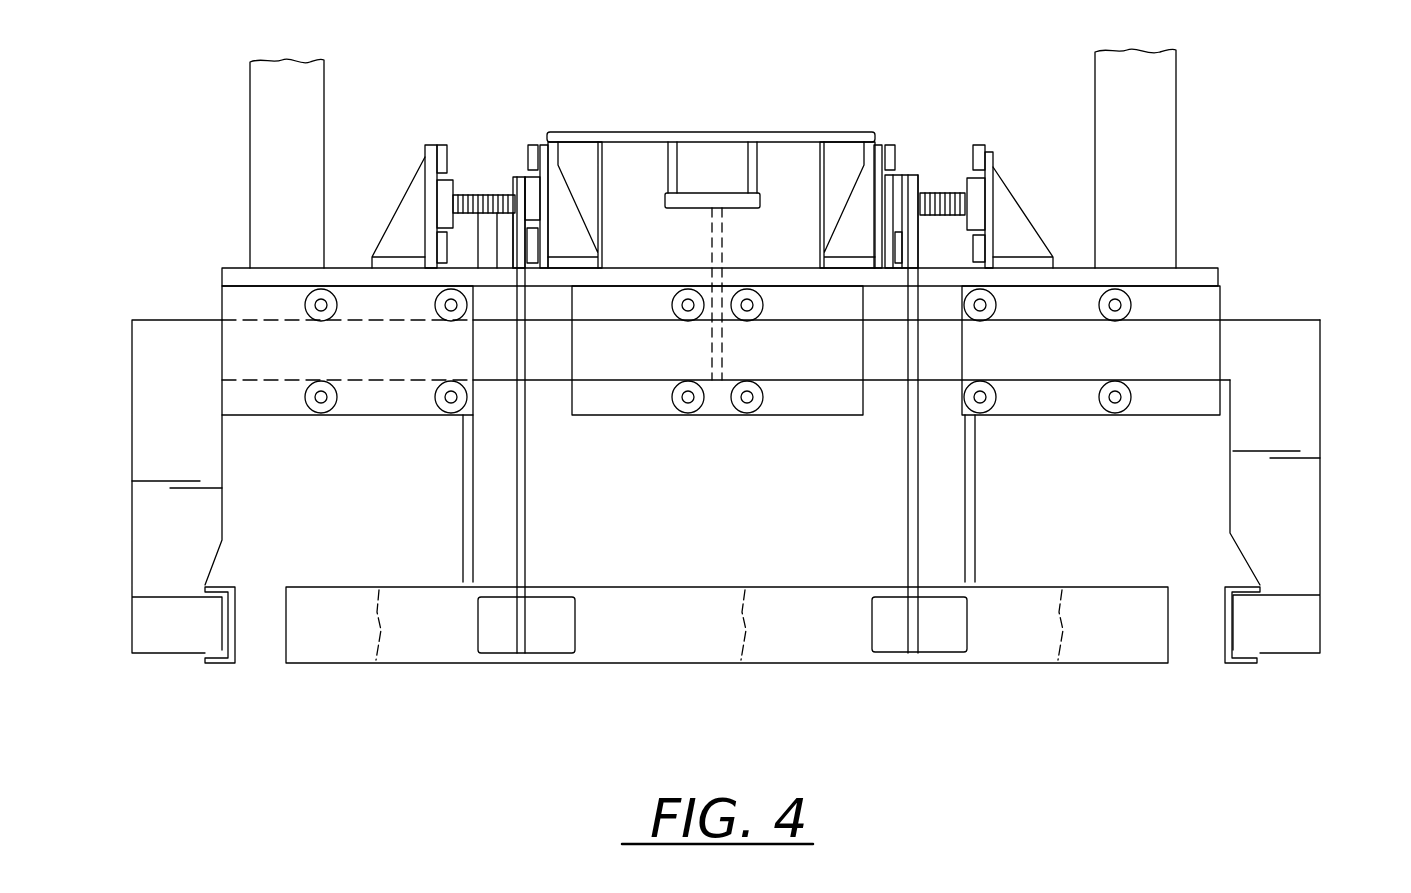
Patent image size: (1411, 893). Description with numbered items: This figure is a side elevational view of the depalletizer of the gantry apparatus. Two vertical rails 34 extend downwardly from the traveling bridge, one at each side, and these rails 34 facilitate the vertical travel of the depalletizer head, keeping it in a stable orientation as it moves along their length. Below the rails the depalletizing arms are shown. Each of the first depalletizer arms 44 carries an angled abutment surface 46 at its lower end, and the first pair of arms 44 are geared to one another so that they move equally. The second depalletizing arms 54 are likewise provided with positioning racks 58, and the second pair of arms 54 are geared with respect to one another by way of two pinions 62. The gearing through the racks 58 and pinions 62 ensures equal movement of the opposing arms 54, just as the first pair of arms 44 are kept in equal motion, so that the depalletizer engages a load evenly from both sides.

The vertical rails 34 is at (263, 142).
The first depalletizer arms 44 is at (1312, 557).
The first angled abutment surface 46 is at (1225, 645).
The second depalletizing arms 54 is at (700, 653).
The second positioning racks 58 is at (512, 190).
The pinions 62 is at (483, 192).